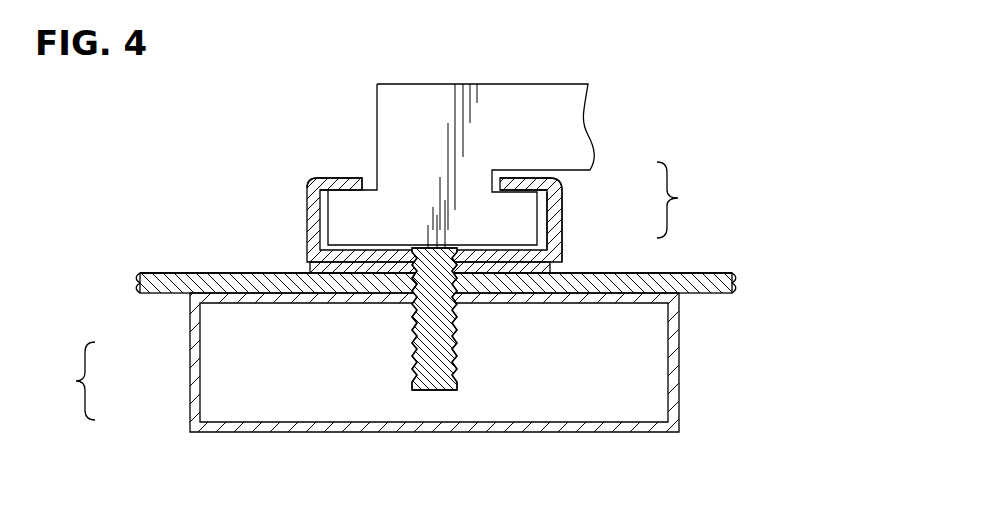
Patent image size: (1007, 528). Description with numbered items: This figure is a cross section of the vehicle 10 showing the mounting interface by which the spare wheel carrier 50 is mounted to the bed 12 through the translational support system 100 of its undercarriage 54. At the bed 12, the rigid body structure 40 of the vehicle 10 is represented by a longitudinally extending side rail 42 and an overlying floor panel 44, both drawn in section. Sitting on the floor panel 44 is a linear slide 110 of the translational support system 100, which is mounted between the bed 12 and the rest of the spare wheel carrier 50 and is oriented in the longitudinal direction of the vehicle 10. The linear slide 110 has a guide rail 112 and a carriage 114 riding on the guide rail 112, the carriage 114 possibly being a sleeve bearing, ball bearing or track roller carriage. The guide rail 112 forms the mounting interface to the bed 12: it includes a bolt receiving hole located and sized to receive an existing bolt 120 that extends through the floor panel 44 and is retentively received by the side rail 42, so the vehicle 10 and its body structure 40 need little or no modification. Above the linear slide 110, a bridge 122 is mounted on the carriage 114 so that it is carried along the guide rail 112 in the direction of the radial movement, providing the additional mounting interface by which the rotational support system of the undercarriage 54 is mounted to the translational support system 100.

The vehicle 10 is at (171, 271).
The bed 12 is at (204, 271).
The body structure 40 is at (69, 381).
The side rail 42 is at (190, 393).
The floor panel 44 is at (158, 293).
The spare wheel carrier 50 is at (345, 275).
The undercarriage 54 is at (305, 191).
The translational support system 100 is at (305, 222).
The linear slide 110 is at (687, 200).
The guide rail 112 is at (562, 238).
The carriage 114 is at (562, 206).
The bolt 120 is at (460, 268).
The bridge 122 is at (588, 122).